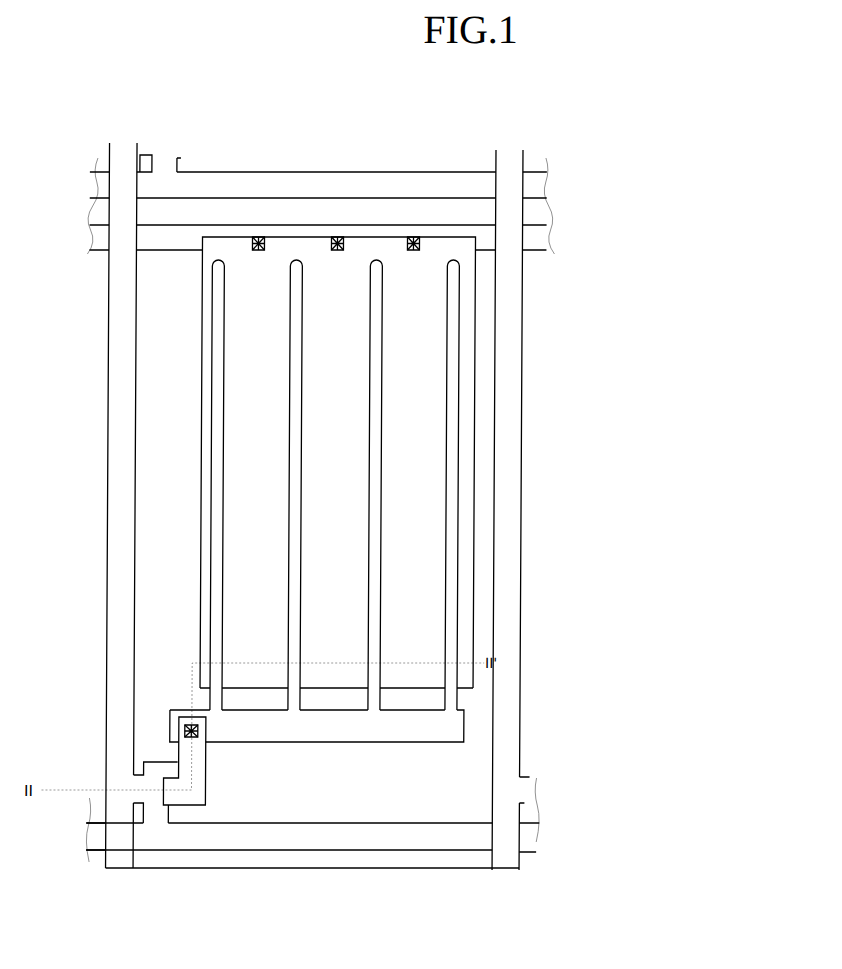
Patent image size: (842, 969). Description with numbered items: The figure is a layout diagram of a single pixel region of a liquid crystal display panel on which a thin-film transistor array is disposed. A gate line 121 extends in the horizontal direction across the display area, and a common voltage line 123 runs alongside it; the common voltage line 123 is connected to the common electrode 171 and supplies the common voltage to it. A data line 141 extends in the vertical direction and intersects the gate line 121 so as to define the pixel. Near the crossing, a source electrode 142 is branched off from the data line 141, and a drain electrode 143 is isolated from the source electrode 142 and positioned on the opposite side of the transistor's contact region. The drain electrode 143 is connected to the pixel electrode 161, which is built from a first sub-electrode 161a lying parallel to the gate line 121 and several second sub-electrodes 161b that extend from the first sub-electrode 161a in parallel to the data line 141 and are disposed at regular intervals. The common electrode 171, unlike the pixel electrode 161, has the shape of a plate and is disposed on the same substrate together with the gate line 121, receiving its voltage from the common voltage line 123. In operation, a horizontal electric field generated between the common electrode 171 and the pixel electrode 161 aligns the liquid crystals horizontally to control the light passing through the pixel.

The gate line 121 is at (331, 171).
The common voltage line 123 is at (423, 226).
The data line 141 is at (108, 400).
The source electrode 142 is at (153, 777).
The drain electrode 143 is at (210, 806).
The pixel electrode 161 is at (425, 501).
The first sub-electrode 161a is at (468, 720).
The second sub-electrode 161b is at (470, 622).
The common electrode 171 is at (476, 329).